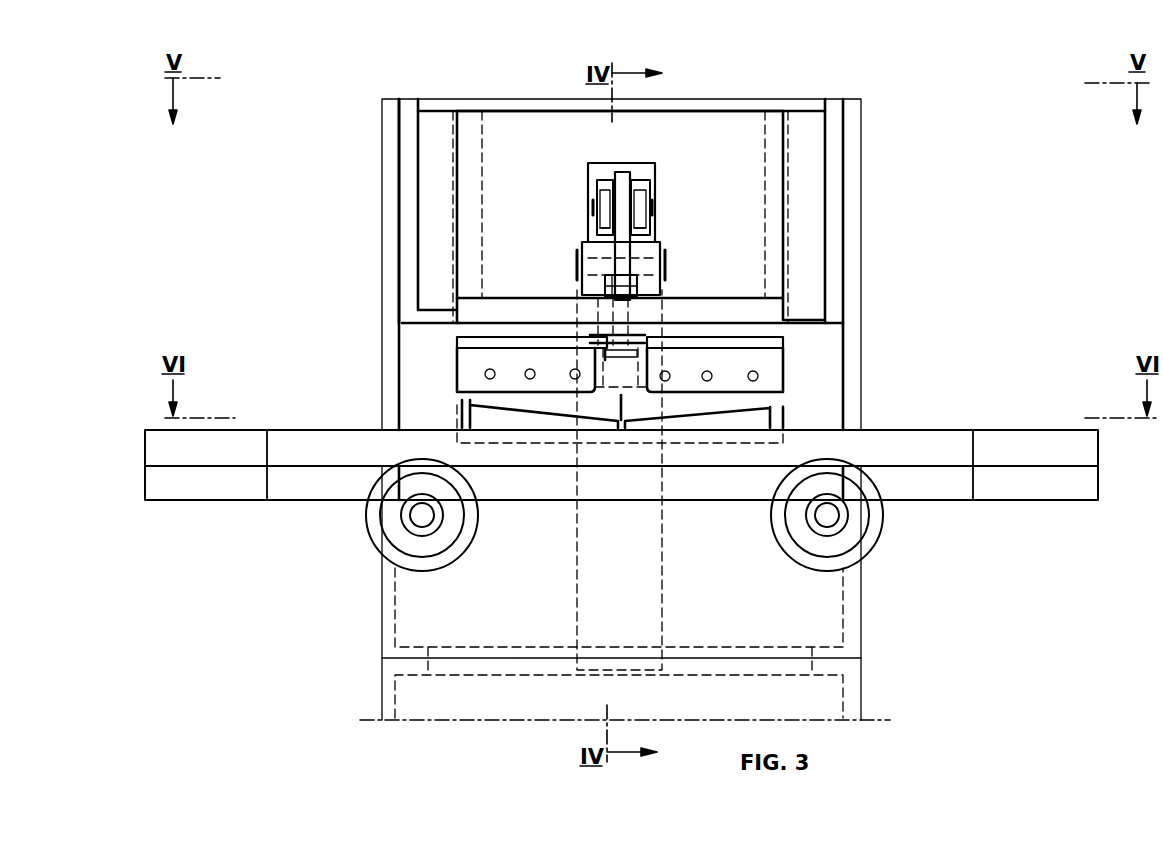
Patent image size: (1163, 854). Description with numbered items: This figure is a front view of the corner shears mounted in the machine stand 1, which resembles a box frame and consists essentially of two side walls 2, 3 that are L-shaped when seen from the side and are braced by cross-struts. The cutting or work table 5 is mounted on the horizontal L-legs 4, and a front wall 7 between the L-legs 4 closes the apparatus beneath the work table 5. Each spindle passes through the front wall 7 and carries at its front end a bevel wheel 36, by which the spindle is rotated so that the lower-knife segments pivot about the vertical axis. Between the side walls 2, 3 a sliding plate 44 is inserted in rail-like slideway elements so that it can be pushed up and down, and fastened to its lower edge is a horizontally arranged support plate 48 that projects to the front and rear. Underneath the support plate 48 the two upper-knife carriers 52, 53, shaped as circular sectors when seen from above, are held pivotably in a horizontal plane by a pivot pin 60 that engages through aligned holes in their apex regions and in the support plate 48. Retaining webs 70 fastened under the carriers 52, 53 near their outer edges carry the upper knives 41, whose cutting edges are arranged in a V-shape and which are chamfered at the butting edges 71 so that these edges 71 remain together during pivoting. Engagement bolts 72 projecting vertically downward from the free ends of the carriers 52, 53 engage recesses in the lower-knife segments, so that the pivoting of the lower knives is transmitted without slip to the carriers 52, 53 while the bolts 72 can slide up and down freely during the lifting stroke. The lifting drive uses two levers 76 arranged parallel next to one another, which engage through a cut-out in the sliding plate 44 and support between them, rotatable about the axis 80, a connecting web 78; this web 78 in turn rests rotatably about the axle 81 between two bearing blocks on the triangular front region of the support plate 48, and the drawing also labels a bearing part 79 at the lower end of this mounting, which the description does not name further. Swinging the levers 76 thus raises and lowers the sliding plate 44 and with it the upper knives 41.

The machine stand 1 is at (870, 132).
The side wall 2 is at (392, 221).
The side wall 3 is at (855, 224).
The horizontal L-legs 4 is at (380, 600).
The work table 5 is at (958, 437).
The front wall 7 is at (830, 622).
The bevel wheel 36 is at (388, 523).
The upper knives 41 is at (521, 405).
The sliding plate 44 is at (735, 120).
The support plate 48 is at (472, 306).
The upper-knife carrier 52 is at (462, 345).
The upper-knife carrier 53 is at (778, 340).
The pivot pin 60 is at (632, 312).
The retaining webs 70 is at (470, 377).
The butting edges 71 is at (620, 422).
The engagement bolts 72 is at (462, 411).
The levers 76 is at (598, 187).
The connecting web 78 is at (615, 240).
The bearing 79 is at (592, 283).
The axis 80 is at (650, 210).
The axle 81 is at (665, 260).